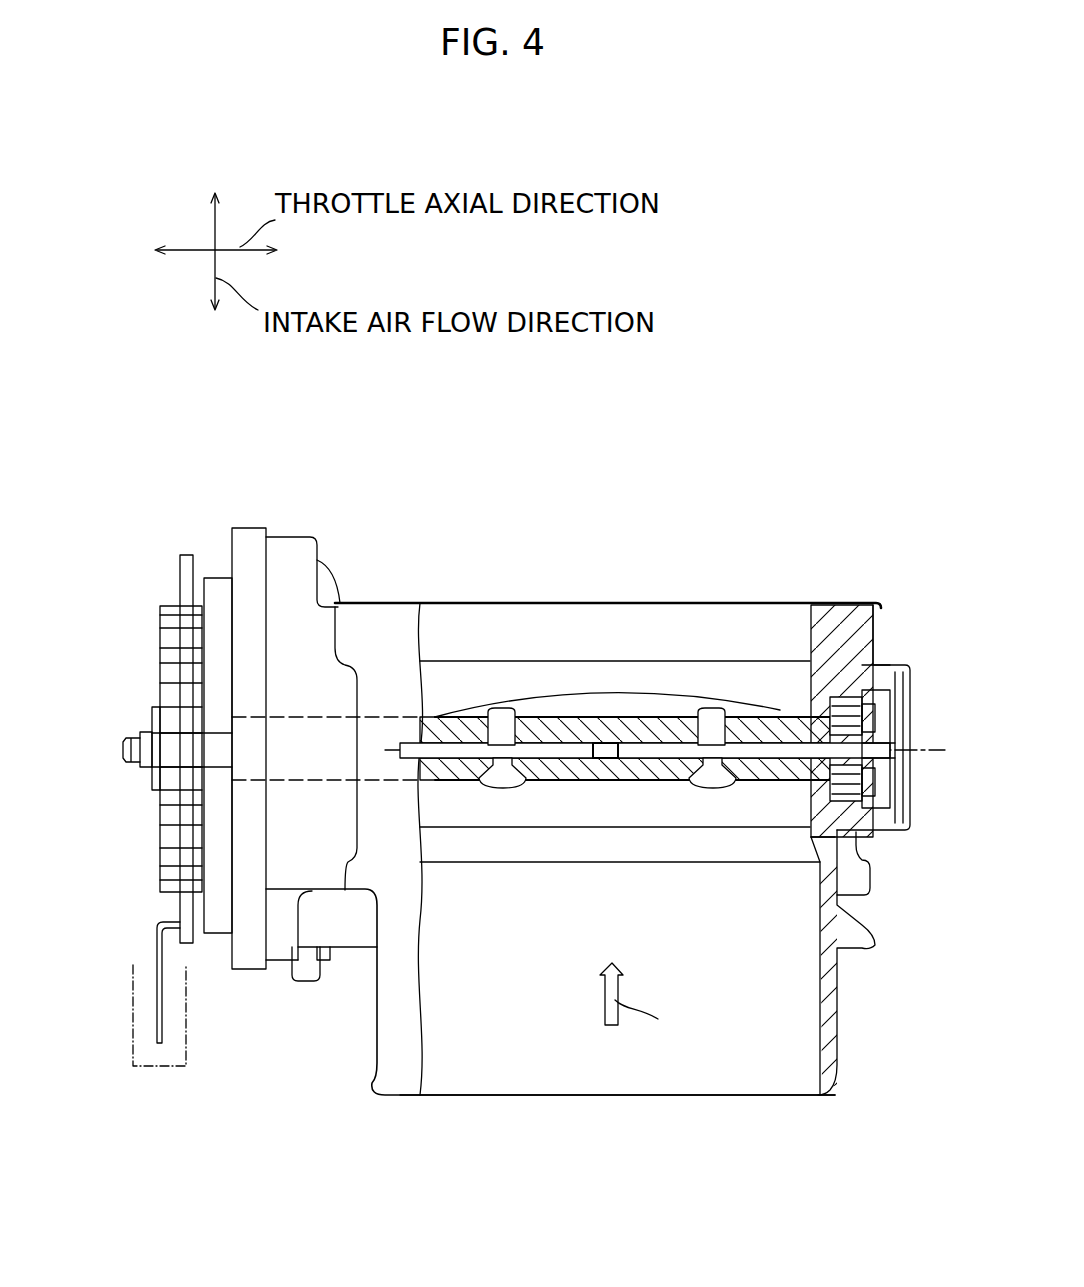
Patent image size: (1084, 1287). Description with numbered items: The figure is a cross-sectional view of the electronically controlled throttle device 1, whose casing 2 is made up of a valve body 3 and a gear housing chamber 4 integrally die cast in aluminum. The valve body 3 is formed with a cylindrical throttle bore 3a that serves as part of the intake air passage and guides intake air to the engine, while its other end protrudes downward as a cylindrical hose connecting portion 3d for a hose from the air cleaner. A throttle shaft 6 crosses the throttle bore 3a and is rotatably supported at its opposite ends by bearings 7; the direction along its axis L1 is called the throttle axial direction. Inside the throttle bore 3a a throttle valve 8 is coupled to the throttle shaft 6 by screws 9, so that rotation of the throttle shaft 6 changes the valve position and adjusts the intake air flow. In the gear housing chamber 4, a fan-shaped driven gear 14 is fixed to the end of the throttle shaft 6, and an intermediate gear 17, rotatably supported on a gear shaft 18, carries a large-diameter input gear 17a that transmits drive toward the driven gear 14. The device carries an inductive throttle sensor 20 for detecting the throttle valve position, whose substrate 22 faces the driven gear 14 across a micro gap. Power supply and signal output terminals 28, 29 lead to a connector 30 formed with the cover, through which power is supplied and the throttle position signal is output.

The throttle device 1 is at (710, 464).
The casing 2 is at (385, 418).
The valve body 3 is at (485, 632).
The throttle bore 3a is at (808, 680).
The hose connecting portion 3d is at (742, 1072).
The gear housing chamber 4 is at (209, 525).
The throttle shaft 6 is at (604, 762).
The bearings 7 is at (853, 697).
The throttle valve 8 is at (612, 703).
The screws 9 is at (506, 783).
The driven gear 14 is at (216, 596).
The intermediate gear 17 is at (160, 655).
The input gear 17a is at (168, 681).
The gear shaft 18 is at (122, 748).
The inductive throttle sensor 20 is at (113, 510).
The substrate 22 is at (183, 580).
The power supply terminal 28 is at (162, 1027).
The signal output terminal 29 is at (168, 982).
The connector 30 is at (160, 1068).
The axis of the throttle shaft L1 is at (928, 745).